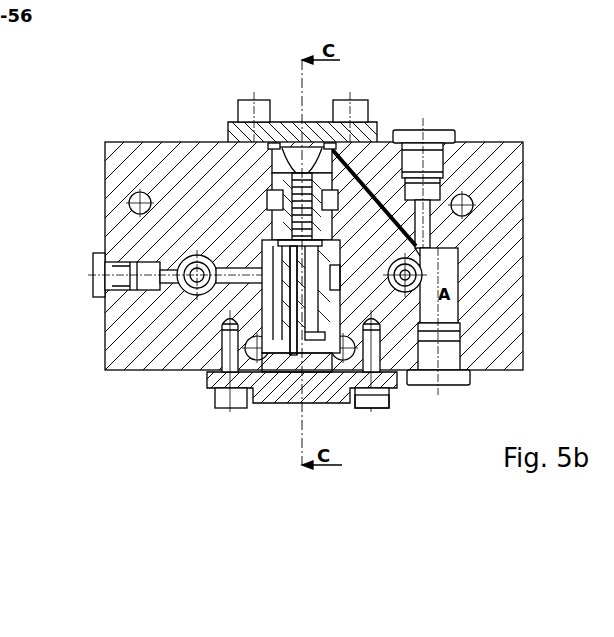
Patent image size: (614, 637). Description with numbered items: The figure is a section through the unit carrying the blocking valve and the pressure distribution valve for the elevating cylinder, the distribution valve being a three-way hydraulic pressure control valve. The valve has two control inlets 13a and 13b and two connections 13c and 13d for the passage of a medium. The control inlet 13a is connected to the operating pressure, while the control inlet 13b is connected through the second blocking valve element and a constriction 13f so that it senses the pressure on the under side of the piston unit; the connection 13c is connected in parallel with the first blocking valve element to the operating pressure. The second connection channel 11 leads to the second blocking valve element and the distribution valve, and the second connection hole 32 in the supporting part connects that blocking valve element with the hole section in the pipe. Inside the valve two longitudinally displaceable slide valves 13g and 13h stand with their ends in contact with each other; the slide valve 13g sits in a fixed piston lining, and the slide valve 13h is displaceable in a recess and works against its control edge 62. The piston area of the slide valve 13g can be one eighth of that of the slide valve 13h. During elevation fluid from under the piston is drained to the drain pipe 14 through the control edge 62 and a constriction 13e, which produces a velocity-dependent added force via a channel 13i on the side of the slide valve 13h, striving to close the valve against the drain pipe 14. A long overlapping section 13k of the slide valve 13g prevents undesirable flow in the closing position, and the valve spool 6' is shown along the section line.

The overlapping section 13k is at (272, 170).
The control inlet 13a is at (298, 178).
The slide valve 13g is at (322, 162).
The constriction 13f is at (268, 232).
The valve spool 6' is at (230, 215).
The connection 13c is at (408, 180).
The connection 13d is at (187, 243).
The second connection hole 32 is at (125, 365).
The second connection channel 11 is at (307, 256).
The control inlet 13b is at (225, 305).
The channel 13i is at (312, 350).
The slide valve 13h is at (328, 285).
The drain pipe 14 is at (355, 390).
The constriction 13e is at (360, 395).
The control edge 62 is at (375, 410).